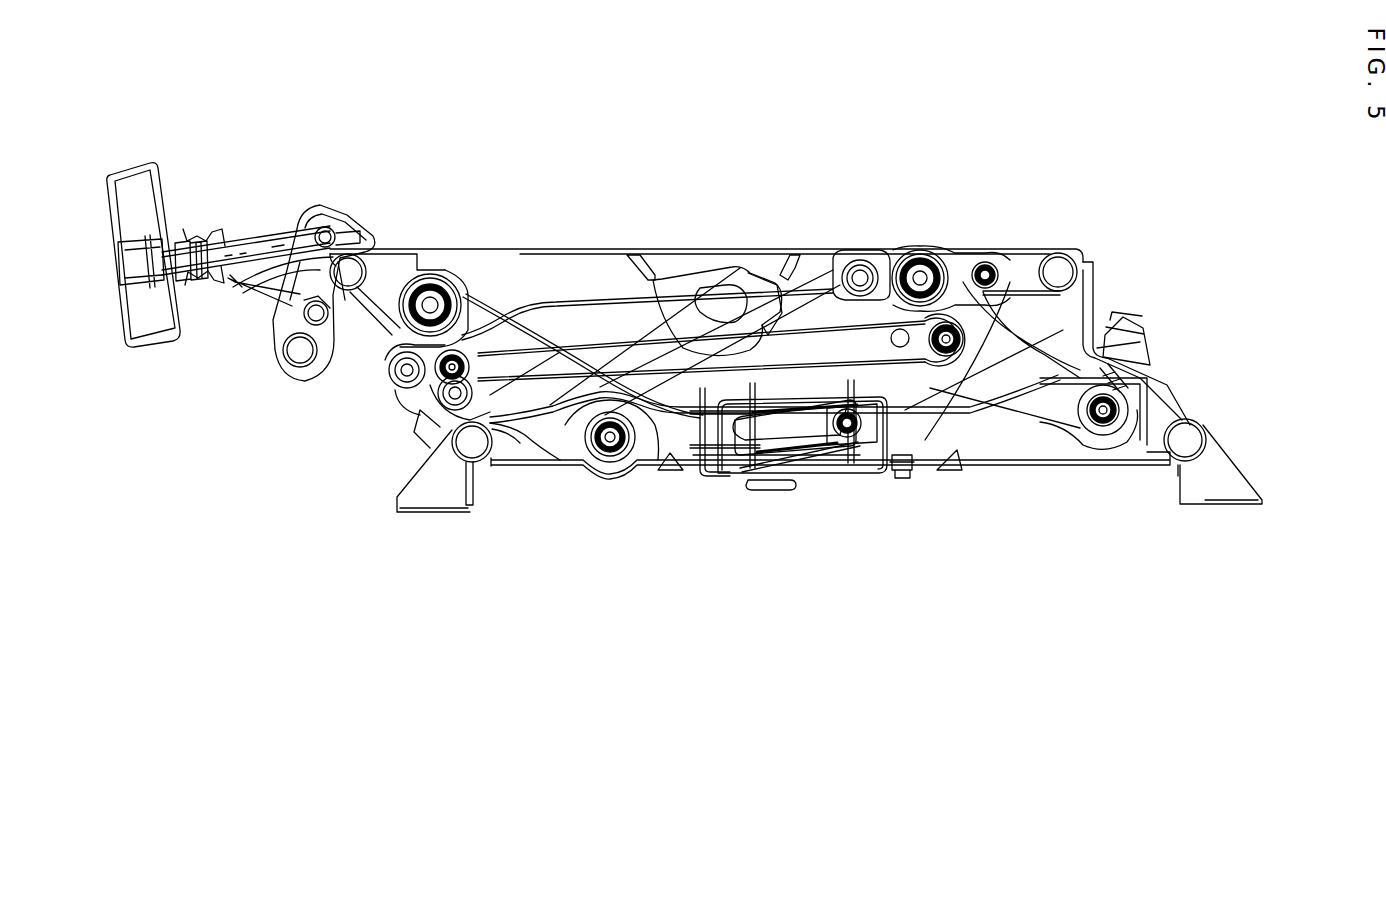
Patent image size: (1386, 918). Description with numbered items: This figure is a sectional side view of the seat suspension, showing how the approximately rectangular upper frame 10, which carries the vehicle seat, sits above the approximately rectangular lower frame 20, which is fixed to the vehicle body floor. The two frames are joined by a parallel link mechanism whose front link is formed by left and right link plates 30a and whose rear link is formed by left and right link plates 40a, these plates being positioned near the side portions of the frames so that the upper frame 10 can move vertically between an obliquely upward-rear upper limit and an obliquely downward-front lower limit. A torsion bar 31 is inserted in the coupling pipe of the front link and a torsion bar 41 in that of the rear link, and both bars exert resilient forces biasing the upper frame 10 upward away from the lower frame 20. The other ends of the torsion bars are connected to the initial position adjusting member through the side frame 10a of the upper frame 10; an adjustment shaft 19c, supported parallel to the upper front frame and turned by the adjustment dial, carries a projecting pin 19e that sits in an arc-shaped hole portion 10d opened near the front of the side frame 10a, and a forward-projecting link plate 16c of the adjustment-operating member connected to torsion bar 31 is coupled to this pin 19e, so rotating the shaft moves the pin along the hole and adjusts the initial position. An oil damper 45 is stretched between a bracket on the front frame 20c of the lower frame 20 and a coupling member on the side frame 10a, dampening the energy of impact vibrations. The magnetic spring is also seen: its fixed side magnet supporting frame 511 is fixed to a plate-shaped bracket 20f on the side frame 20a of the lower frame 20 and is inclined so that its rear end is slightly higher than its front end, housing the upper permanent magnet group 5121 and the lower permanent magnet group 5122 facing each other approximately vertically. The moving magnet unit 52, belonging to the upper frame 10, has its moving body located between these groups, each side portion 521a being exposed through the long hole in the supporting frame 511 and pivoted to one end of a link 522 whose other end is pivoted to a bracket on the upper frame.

The upper frame 10 is at (538, 237).
The side frame 10a is at (678, 250).
The arc-shaped hole portion 10d is at (273, 316).
The link plate 16c is at (370, 355).
The adjustment shaft 19c is at (296, 352).
The projecting pin 19e is at (320, 325).
The lower frame 20 is at (578, 487).
The side frame 20a is at (622, 470).
The front frame 20c is at (484, 462).
The plate-shaped bracket 20f is at (932, 478).
The link plate 30a is at (484, 372).
The torsion bar 31 is at (432, 300).
The link plate 40a is at (1033, 350).
The torsion bar 41 is at (920, 262).
The oil damper 45 is at (577, 315).
The fixed side magnet supporting frame 511 is at (708, 410).
The permanent magnet group 5121 is at (778, 412).
The permanent magnet group 5122 is at (793, 453).
The moving magnet unit 52 is at (803, 445).
The side portion 521a is at (845, 452).
The link 522 is at (963, 355).